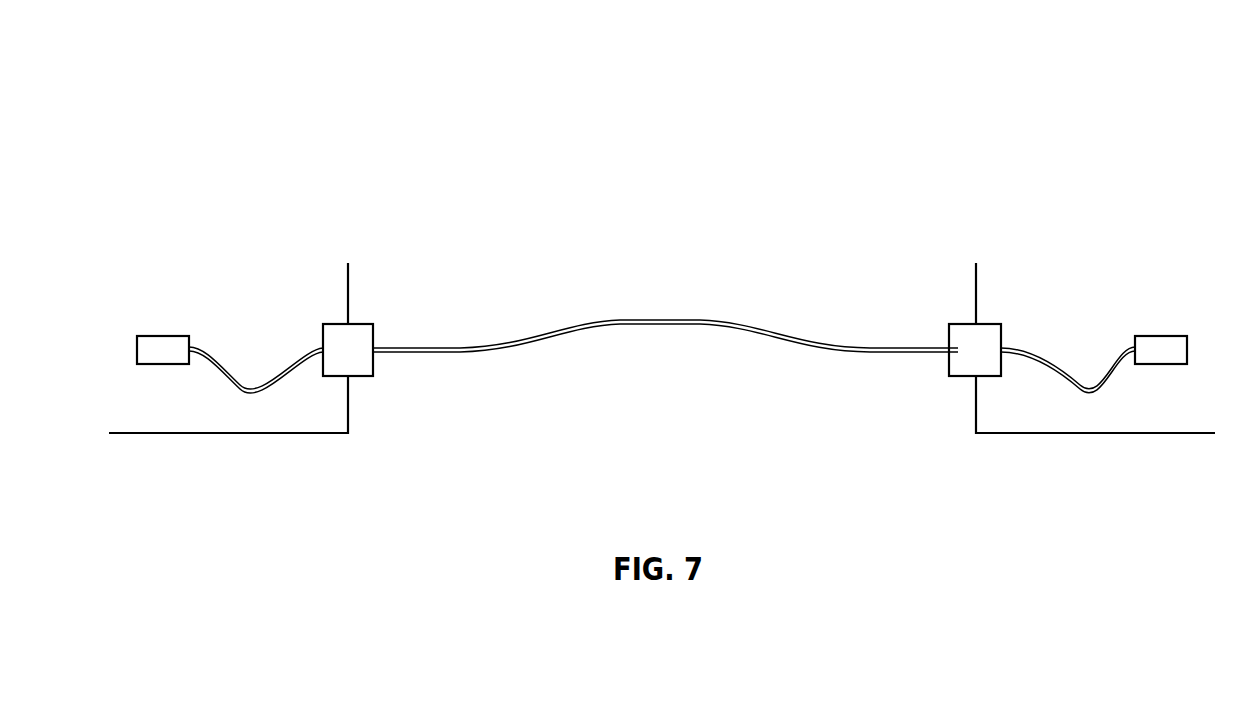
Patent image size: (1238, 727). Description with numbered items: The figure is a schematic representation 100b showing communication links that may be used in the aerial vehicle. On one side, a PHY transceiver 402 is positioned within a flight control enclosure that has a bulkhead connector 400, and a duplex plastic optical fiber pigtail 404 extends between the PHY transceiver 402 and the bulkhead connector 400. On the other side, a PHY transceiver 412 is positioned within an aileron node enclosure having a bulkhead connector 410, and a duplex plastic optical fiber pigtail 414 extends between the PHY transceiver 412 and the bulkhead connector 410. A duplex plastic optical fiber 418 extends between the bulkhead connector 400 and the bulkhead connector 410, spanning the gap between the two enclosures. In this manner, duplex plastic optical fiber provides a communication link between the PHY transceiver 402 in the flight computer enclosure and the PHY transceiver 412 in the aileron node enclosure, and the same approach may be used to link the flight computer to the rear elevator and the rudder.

The schematic representation 100b is at (1010, 88).
The bulkhead connector 400 is at (957, 376).
The PHY transceiver 402 is at (1156, 336).
The duplex plastic optical fiber pigtail 404 is at (1080, 389).
The bulkhead connector 410 is at (363, 376).
The PHY transceiver 412 is at (165, 336).
The duplex plastic optical fiber pigtail 414 is at (241, 389).
The duplex plastic optical fiber 418 is at (647, 319).